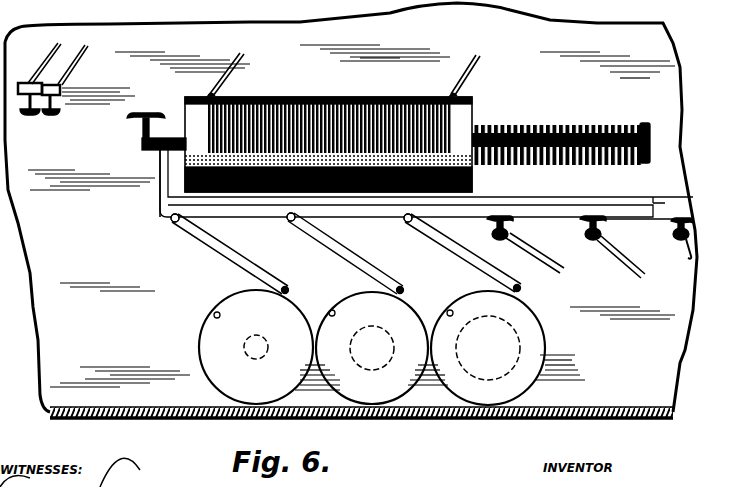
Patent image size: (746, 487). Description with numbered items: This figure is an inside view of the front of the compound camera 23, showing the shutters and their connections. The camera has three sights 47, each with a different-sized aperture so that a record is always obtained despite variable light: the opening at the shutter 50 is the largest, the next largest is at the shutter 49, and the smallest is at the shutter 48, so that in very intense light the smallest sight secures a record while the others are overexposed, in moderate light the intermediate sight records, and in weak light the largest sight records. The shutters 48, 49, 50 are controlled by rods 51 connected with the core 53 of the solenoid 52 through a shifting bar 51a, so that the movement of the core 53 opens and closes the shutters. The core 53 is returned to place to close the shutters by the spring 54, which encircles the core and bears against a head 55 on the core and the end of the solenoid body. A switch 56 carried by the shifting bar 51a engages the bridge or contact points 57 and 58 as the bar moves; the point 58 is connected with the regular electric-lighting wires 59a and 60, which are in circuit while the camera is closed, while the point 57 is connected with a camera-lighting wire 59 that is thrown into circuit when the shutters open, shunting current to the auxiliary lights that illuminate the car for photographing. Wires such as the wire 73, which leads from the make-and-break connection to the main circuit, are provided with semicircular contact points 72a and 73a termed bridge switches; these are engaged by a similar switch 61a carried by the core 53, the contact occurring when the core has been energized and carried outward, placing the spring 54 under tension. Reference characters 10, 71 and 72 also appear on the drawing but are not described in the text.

The operating rod 10 is at (228, 66).
The compound camera 23 is at (351, 211).
The sights 47 is at (258, 333).
The shutter 48 is at (256, 347).
The shutter 49 is at (397, 387).
The shutter 50 is at (518, 394).
The rods 51 is at (246, 246).
The shifting bar 51a is at (406, 186).
The solenoid 52 is at (338, 97).
The core 53 is at (172, 137).
The spring 54 is at (632, 125).
The head 55 is at (650, 147).
The switch 56 is at (660, 199).
The bridge or contact point 57 is at (503, 213).
The bridge or contact point 58 is at (672, 231).
The camera-lighting wire 59 is at (553, 248).
The electric-lighting wire 59a is at (632, 270).
The electric-lighting wire 60 is at (687, 254).
The switch 61a is at (143, 112).
The operating rod 71 is at (468, 70).
The key lever 72 is at (39, 68).
The contact point 72a is at (29, 117).
The wire 73 is at (80, 63).
The contact point 73a is at (52, 115).